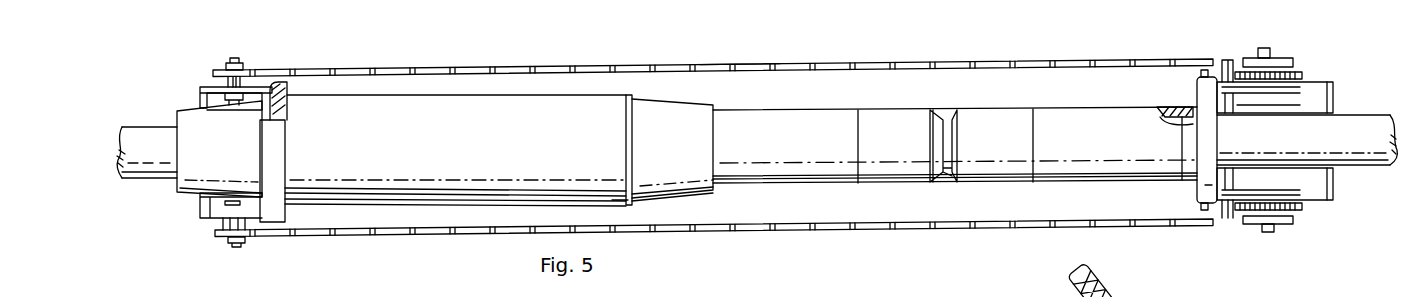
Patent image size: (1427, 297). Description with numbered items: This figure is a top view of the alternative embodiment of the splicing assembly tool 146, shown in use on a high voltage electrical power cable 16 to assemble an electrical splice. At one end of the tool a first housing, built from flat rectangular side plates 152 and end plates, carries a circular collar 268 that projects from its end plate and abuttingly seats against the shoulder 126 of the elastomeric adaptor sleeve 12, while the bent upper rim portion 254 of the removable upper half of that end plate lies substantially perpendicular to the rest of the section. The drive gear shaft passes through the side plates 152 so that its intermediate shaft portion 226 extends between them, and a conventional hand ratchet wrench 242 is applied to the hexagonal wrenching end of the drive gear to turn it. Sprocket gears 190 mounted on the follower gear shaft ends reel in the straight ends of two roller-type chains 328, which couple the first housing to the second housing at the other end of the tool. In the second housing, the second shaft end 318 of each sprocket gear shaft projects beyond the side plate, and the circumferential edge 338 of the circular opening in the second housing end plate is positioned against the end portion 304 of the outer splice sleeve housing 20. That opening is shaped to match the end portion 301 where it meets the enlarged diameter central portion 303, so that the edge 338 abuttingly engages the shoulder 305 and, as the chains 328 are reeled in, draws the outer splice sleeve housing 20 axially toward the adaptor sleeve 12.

The adaptor sleeve 12 is at (807, 110).
The high voltage electrical power cable 16 is at (150, 126).
The outer splice sleeve housing 20 is at (540, 95).
The shoulder 126 is at (1191, 107).
The splicing assembly tool 146 is at (783, 50).
The side plate 152 is at (1315, 82).
The sprocket gear 190 is at (1285, 55).
The intermediate shaft portion 226 is at (1237, 107).
The hand ratchet wrench 242 is at (1043, 296).
The upper rim portion 254 is at (1208, 190).
The collar 268 is at (1192, 107).
The end portion 301 is at (675, 118).
The enlarged diameter central portion 303 is at (616, 203).
The end portion of outer housing 304 is at (195, 172).
The shoulder 305 is at (283, 147).
The second shaft end 318 is at (233, 62).
The roller-type chain 328 is at (882, 62).
The circumferential edge 338 is at (286, 167).